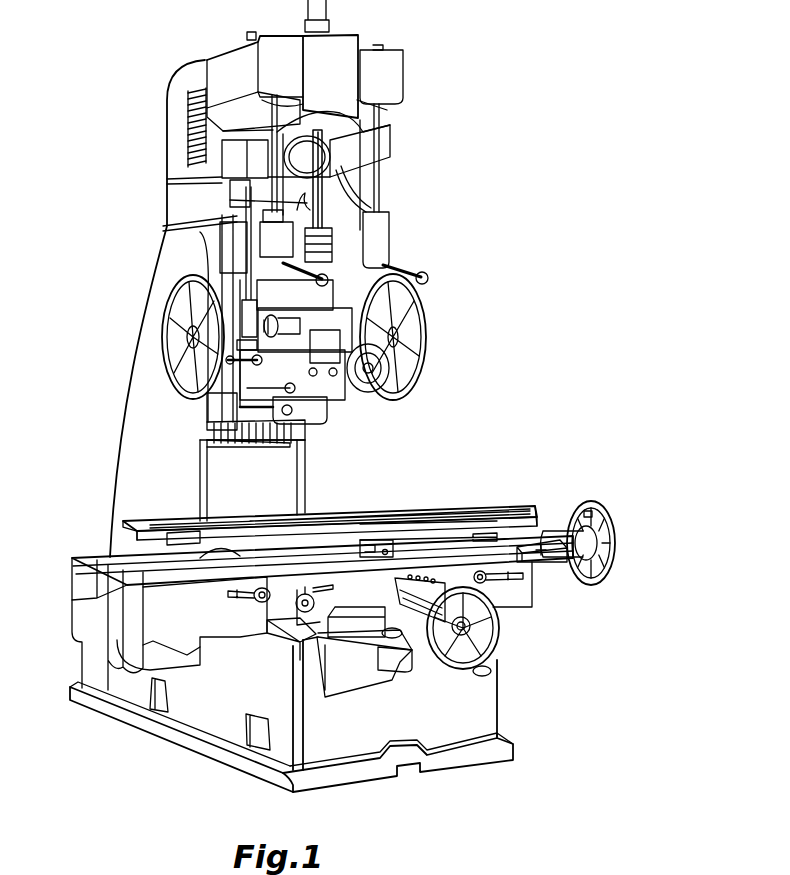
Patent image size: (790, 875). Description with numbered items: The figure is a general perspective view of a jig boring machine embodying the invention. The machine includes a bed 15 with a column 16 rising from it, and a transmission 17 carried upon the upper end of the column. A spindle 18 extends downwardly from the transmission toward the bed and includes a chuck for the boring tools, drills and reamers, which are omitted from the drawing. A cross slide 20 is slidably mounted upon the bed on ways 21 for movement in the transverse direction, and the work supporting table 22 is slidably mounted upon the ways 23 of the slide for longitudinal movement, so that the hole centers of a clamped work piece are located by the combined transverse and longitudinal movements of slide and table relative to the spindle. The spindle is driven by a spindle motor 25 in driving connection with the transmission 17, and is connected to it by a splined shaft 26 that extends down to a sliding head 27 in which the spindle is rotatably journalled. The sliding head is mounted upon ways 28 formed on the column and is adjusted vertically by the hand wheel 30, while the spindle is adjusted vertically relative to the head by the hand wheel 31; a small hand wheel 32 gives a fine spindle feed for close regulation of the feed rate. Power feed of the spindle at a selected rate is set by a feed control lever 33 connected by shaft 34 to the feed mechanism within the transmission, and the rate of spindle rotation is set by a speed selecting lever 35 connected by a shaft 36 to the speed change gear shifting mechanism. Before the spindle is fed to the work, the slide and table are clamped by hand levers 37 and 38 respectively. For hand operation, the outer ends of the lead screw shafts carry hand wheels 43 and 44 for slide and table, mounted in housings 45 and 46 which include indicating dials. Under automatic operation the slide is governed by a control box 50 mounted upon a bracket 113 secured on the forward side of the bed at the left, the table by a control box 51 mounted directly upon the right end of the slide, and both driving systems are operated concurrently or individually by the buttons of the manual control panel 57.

The bed 15 is at (210, 721).
The column 16 is at (132, 419).
The transmission 17 is at (342, 50).
The spindle 18 is at (325, 410).
The cross slide 20 is at (157, 610).
The ways 21 is at (283, 640).
The work supporting table 22 is at (370, 512).
The ways 23 is at (138, 562).
The spindle motor 25 is at (170, 100).
The splined shaft 26 is at (320, 182).
The sliding head 27 is at (240, 290).
The ways 28 is at (287, 433).
The hand wheel 30 is at (180, 352).
The hand wheel 31 is at (413, 320).
The small hand wheel 32 is at (383, 368).
The feed control lever 33 is at (425, 274).
The shaft 34 is at (377, 137).
The speed selecting lever 35 is at (327, 280).
The shaft 36 is at (265, 190).
The hand lever 37 is at (236, 596).
The hand lever 38 is at (412, 540).
The hand wheel 43 is at (500, 657).
The hand wheel 44 is at (617, 537).
The housing 45 is at (425, 630).
The housing 46 is at (577, 548).
The control box 50 is at (366, 656).
The control box 51 is at (543, 547).
The manual control panel 57 is at (403, 578).
The bracket 113 is at (353, 677).